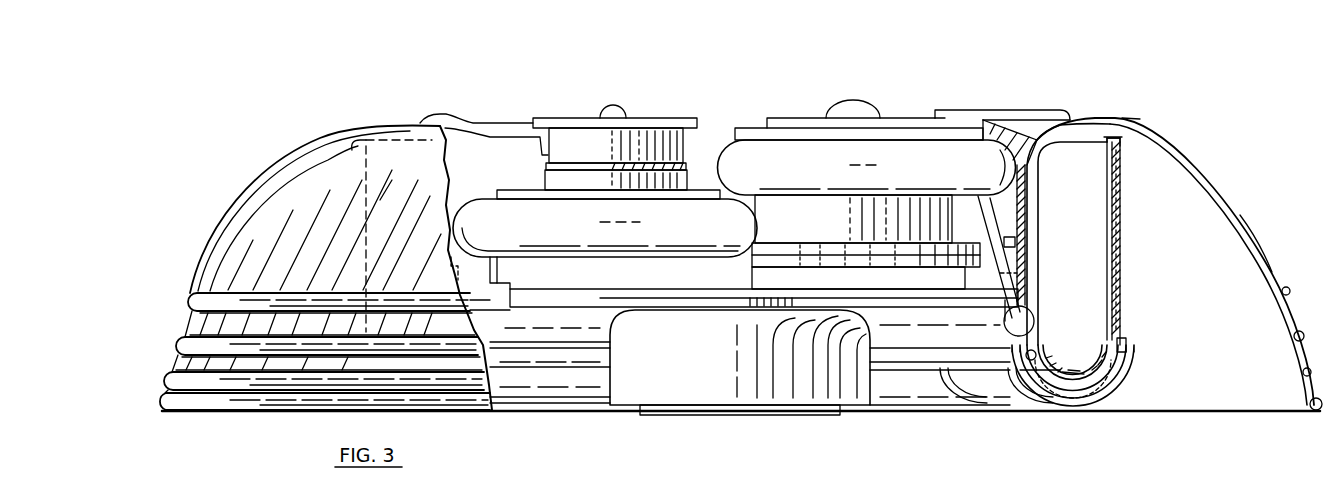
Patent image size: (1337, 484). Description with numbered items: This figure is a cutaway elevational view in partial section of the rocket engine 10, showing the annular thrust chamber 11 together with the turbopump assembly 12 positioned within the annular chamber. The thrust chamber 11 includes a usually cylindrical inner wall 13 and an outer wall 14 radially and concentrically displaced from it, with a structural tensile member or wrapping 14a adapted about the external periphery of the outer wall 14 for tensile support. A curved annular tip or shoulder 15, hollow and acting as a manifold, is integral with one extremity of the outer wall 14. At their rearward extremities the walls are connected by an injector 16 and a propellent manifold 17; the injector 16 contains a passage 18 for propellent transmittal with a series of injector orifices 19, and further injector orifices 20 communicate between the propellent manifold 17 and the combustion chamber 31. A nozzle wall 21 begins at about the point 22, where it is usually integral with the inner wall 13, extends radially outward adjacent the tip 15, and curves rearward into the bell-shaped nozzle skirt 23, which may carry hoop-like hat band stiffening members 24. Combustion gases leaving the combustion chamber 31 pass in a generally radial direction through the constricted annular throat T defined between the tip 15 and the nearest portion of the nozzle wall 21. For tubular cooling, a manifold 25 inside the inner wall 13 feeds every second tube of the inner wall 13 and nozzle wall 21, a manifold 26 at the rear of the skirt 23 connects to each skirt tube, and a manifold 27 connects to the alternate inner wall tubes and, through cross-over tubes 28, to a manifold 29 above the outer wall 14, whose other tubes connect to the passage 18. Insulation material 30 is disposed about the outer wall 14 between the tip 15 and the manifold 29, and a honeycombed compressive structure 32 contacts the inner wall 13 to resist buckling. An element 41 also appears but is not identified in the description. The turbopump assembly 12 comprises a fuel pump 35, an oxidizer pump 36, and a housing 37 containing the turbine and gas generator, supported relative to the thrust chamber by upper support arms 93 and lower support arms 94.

The rocket engine 10 is at (960, 95).
The thrust chamber 11 is at (1120, 104).
The turbopump assembly 12 is at (730, 110).
The inner wall 13 is at (1038, 192).
The outer wall 14 is at (1122, 258).
The structural tensile member or wrapping 14a is at (1122, 236).
The curved annular tip or shoulder 15 is at (1123, 148).
The injector 16 is at (1108, 384).
The propellent manifold 17 is at (1076, 402).
The passage 18 is at (1054, 368).
The injector orifices 19 is at (1096, 368).
The injector orifices 20 is at (1090, 378).
The nozzle wall 21 is at (1232, 192).
The point 22 is at (1040, 160).
The nozzle skirt 23 is at (1268, 257).
The hat band stiffening members 24 is at (1299, 340).
The manifold 25 is at (1010, 322).
The manifold 26 is at (1305, 412).
The manifold 27 is at (1020, 352).
The cross-over tubes 28 is at (1124, 366).
The manifold 29 is at (1124, 344).
The insulation material 30 is at (1122, 200).
The combustion chamber 31 is at (1083, 251).
The compressive structure 32 is at (1022, 228).
The fuel pump 35 is at (893, 120).
The oxidizer pump 36 is at (565, 118).
The housing 37 is at (612, 326).
The bumper 41 is at (989, 169).
The upper support arms 93 is at (497, 132).
The lower support arms 94 is at (505, 298).
The constricted annular throat T is at (1112, 137).